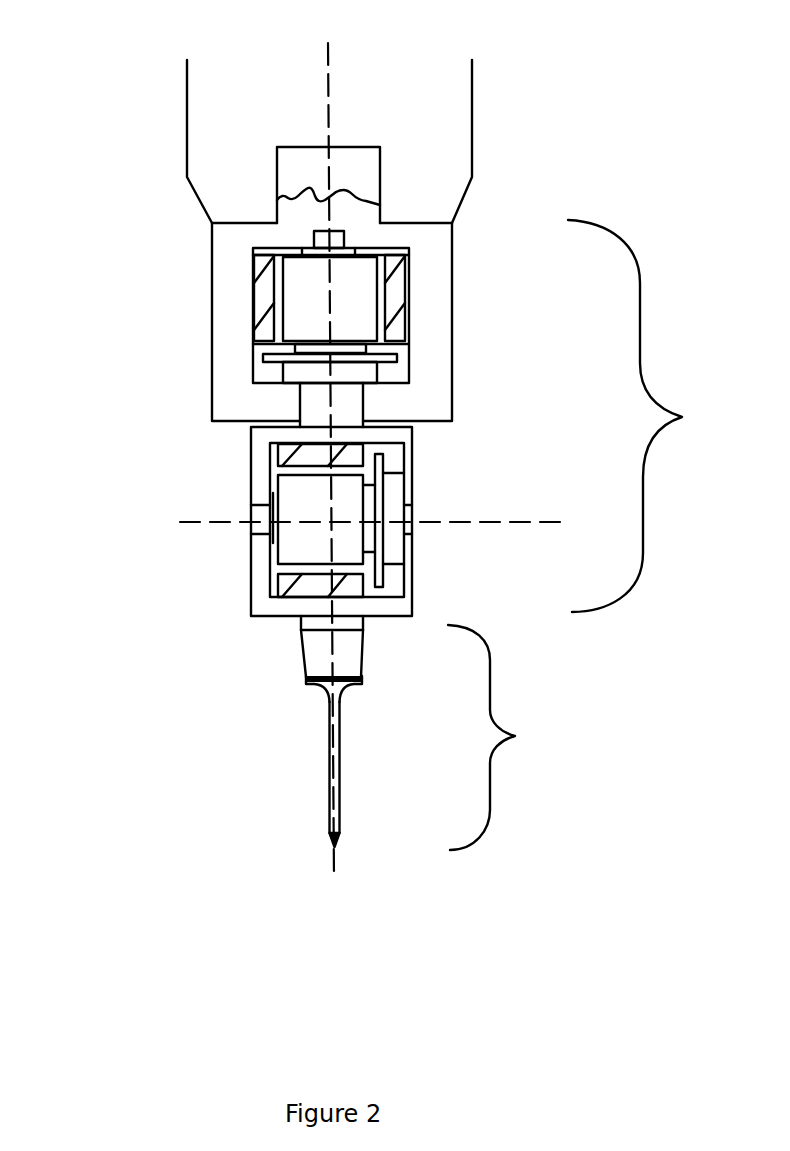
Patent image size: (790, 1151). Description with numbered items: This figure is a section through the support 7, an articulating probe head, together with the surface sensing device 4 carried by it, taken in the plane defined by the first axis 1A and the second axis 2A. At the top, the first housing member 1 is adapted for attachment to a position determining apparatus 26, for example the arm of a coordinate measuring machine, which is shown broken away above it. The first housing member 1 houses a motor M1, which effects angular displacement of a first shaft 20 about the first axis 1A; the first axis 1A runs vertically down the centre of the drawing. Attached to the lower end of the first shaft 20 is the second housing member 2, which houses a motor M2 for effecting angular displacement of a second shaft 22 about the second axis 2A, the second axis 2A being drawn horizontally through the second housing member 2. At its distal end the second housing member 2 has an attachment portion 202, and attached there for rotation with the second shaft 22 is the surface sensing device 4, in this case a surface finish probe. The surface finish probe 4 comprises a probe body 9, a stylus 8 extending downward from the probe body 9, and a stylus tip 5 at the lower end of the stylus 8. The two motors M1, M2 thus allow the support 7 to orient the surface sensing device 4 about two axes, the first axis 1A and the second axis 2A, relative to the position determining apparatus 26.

The first housing member 1 is at (225, 251).
The second housing member 2 is at (261, 470).
The surface sensing device 4 is at (495, 737).
The stylus tip 5 is at (330, 845).
The support 7 is at (644, 416).
The stylus 8 is at (316, 738).
The probe body 9 is at (317, 652).
The first shaft 20 is at (316, 400).
The second shaft 22 is at (263, 513).
The position determining apparatus 26 is at (230, 102).
The attachment portion 202 is at (310, 623).
The motor M1 is at (320, 302).
The motor M2 is at (302, 548).
The first axis 1A is at (321, 441).
The second axis 2A is at (393, 521).